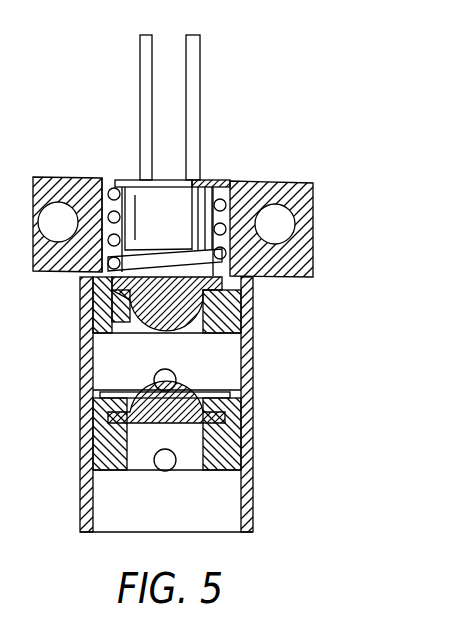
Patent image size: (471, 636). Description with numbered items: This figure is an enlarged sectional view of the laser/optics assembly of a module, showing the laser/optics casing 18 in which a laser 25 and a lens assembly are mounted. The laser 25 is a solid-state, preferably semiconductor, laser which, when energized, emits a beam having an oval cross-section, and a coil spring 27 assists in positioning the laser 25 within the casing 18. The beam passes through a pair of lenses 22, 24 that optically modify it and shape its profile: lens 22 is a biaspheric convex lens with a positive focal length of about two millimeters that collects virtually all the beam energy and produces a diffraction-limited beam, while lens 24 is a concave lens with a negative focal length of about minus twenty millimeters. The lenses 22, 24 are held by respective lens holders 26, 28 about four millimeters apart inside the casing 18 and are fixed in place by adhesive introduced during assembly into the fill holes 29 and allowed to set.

The laser/optics casing 18 is at (313, 183).
The biaspheric convex lens 22 is at (240, 283).
The concave lens 24 is at (236, 411).
The laser 25 is at (180, 198).
The lens holder 26 is at (95, 332).
The coil spring 27 is at (99, 186).
The lens holder 28 is at (97, 450).
The fill holes 29 is at (86, 283).